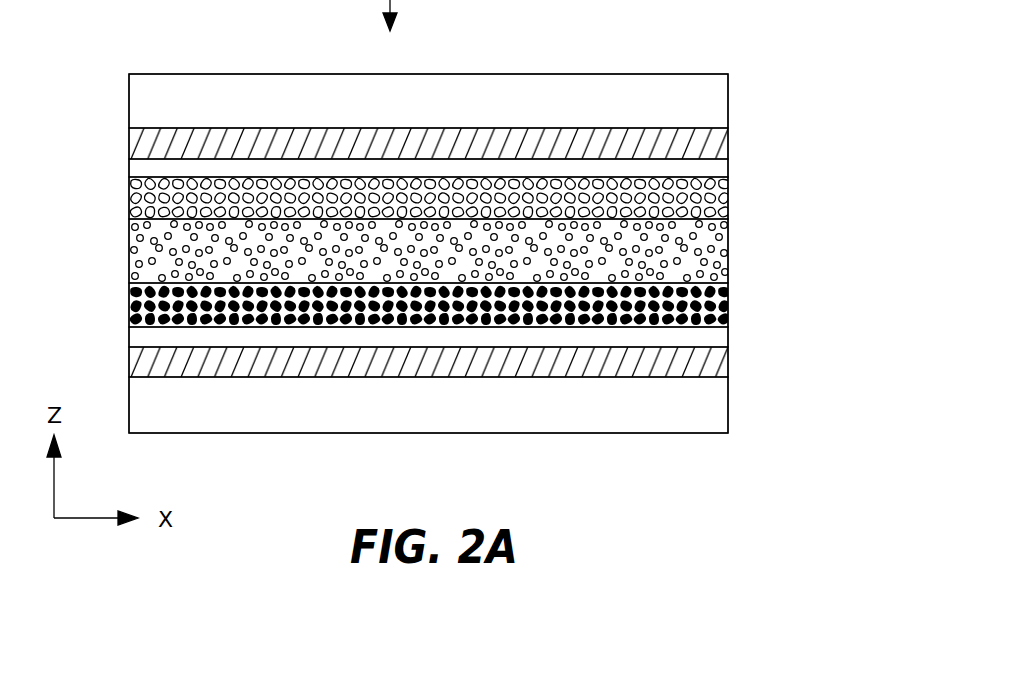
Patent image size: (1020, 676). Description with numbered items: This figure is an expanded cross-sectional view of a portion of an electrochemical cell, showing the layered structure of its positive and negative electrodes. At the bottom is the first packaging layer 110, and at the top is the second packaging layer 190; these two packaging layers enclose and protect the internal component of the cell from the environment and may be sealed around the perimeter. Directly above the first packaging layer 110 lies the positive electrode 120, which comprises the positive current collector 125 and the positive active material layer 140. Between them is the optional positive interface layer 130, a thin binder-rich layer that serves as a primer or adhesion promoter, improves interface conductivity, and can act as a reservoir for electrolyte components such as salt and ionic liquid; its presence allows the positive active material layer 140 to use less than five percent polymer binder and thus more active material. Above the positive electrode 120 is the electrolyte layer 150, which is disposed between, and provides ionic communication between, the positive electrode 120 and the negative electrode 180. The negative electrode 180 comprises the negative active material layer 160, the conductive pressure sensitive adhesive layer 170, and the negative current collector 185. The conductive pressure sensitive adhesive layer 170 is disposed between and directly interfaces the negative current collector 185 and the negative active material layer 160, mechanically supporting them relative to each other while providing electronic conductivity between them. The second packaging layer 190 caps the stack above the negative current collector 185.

The first packaging layer 110 is at (710, 396).
The positive electrode 120 is at (451, 352).
The positive current collector 125 is at (719, 356).
The positive interface layer 130 is at (715, 338).
The positive active material layer 140 is at (730, 300).
The electrolyte layer 150 is at (128, 263).
The negative active material layer 160 is at (730, 197).
The conductive pressure sensitive adhesive layer 170 is at (711, 169).
The negative electrode 180 is at (447, 153).
The negative current collector 185 is at (714, 143).
The second packaging layer 190 is at (710, 89).